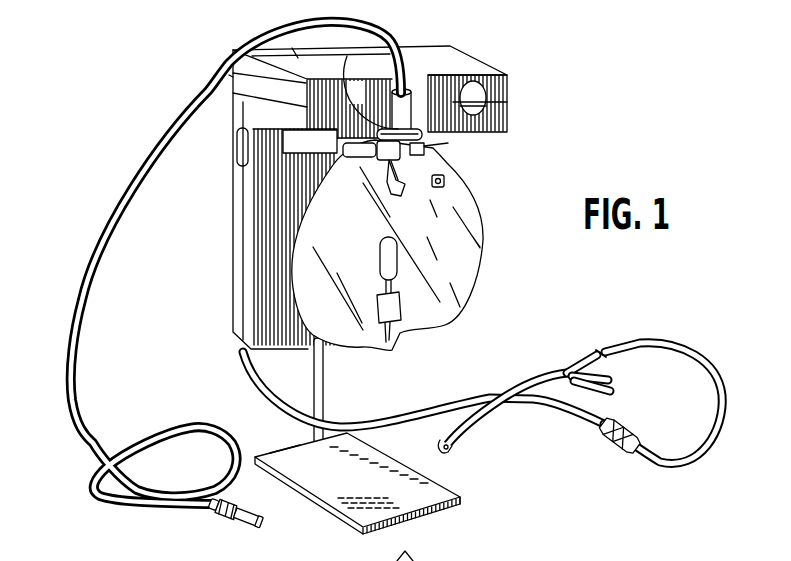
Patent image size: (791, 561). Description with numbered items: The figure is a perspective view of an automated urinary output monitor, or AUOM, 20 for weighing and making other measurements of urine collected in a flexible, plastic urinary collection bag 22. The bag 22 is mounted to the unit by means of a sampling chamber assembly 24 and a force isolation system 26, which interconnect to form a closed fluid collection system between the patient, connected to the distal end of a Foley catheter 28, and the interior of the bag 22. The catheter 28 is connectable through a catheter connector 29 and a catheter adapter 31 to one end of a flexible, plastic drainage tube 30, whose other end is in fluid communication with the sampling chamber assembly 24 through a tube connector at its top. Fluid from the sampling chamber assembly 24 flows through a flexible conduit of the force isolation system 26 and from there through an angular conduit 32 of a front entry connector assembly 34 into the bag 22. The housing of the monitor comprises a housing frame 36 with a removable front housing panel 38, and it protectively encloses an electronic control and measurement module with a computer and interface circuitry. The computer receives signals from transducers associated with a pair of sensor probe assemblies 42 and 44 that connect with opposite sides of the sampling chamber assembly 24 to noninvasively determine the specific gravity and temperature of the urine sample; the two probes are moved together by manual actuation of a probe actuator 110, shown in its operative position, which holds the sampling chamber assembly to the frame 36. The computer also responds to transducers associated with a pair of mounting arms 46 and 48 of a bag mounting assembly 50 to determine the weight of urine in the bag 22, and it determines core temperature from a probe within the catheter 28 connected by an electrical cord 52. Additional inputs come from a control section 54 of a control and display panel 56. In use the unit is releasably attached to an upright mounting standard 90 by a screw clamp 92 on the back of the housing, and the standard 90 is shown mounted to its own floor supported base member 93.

The automated urinary output monitor 20 is at (598, 70).
The urinary collection bag 22 is at (477, 223).
The sampling chamber assembly 24 is at (417, 87).
The force isolation system 26 is at (422, 134).
The Foley catheter 28 is at (460, 440).
The catheter connector 29 is at (613, 373).
The drainage tube 30 is at (133, 177).
The catheter adapter 31 is at (247, 527).
The angular conduit 32 is at (430, 146).
The front entry connector assembly 34 is at (420, 181).
The housing frame 36 is at (231, 178).
The front housing panel 38 is at (267, 278).
The sensor probe assembly 42 is at (372, 24).
The sensor probe assembly 44 is at (430, 103).
The mounting arm 46 is at (392, 105).
The mounting arm 48 is at (448, 144).
The bag mounting assembly 50 is at (367, 166).
The electrical cord 52 is at (653, 343).
The control section 54 is at (292, 48).
The control and display panel 56 is at (229, 75).
The mounting standard 90 is at (327, 374).
The screw clamp 92 is at (357, 497).
The base member 93 is at (292, 447).
The probe actuator 110 is at (507, 103).